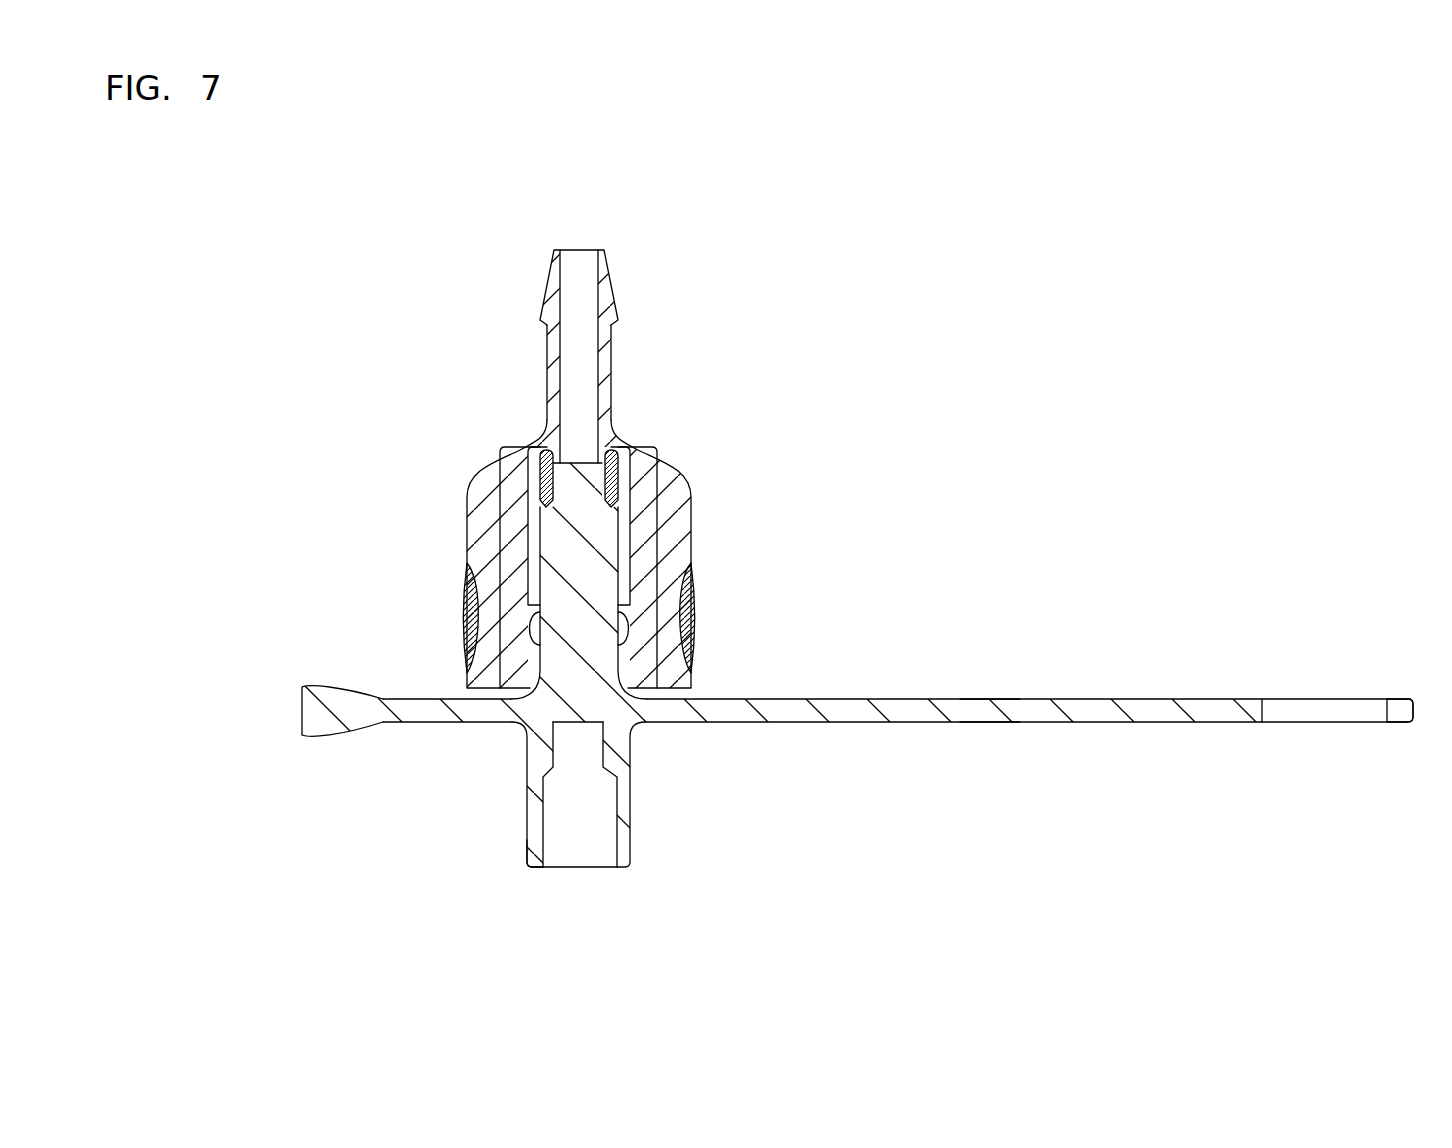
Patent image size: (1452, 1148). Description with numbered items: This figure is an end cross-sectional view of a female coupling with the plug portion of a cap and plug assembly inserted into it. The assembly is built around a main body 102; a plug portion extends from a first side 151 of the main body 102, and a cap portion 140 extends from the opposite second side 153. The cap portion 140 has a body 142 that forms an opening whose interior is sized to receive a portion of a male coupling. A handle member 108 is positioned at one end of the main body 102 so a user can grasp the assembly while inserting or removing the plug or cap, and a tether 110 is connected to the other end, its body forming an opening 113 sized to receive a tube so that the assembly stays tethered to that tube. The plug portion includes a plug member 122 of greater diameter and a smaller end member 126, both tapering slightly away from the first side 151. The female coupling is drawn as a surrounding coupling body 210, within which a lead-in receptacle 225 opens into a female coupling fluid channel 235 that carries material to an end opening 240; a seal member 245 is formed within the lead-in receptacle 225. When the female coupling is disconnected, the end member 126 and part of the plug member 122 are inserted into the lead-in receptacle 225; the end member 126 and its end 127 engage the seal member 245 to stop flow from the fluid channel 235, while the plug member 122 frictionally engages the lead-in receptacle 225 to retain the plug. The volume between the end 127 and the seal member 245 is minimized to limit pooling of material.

The main body 102 is at (1128, 705).
The handle member 108 is at (310, 720).
The tether 110 is at (1400, 705).
The opening 113 is at (1326, 712).
The plug member 122 is at (610, 603).
The end member 126 is at (563, 490).
The end 127 is at (587, 443).
The cap portion 140 is at (645, 822).
The body 142 is at (528, 848).
The first side 151 is at (989, 690).
The second side 153 is at (989, 731).
The cap 210 is at (476, 533).
The lead-in receptacle 225 is at (626, 522).
The female coupling fluid channel 235 is at (585, 393).
The end opening 240 is at (606, 262).
The seal member 245 is at (610, 483).